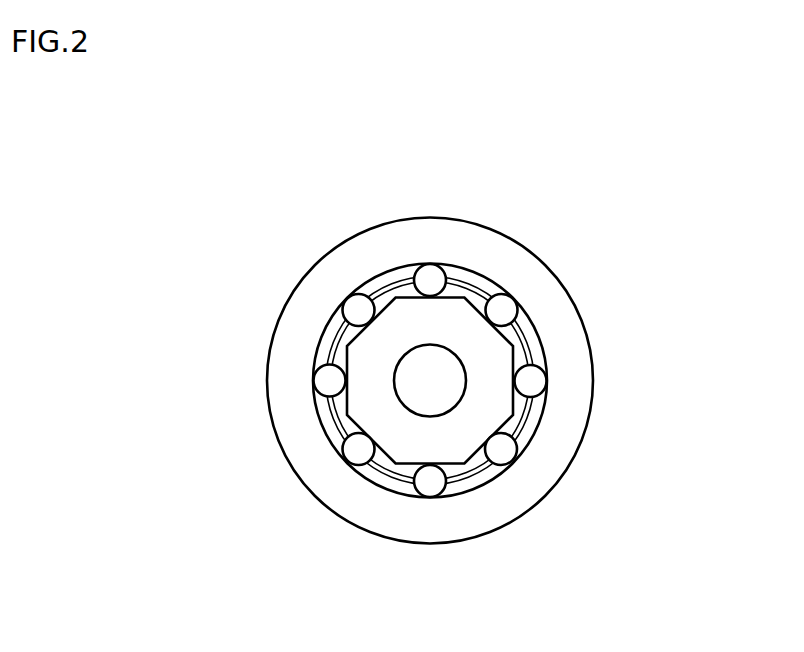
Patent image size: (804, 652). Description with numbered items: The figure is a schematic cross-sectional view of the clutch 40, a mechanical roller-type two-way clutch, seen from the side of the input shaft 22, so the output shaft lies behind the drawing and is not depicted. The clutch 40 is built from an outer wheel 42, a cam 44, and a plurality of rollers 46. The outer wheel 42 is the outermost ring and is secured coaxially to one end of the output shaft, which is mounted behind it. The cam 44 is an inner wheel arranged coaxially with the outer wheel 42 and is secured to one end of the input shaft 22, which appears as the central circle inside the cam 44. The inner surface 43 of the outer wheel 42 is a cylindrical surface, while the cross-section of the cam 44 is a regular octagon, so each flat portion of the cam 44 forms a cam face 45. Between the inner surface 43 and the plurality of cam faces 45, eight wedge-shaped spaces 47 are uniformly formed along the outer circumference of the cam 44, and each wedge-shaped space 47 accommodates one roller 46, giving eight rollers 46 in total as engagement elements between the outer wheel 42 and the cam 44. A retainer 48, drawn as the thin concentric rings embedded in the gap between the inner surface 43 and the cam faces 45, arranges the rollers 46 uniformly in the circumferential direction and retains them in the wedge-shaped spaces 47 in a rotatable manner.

The clutch 40 is at (280, 177).
The outer wheel 42 is at (343, 275).
The inner surface 43 is at (466, 272).
The cam 44 is at (373, 403).
The cam face 45 is at (400, 283).
The roller 46 is at (503, 307).
The wedge-shaped space 47 is at (405, 290).
The retainer 48 is at (523, 418).
The input shaft 22 is at (462, 355).